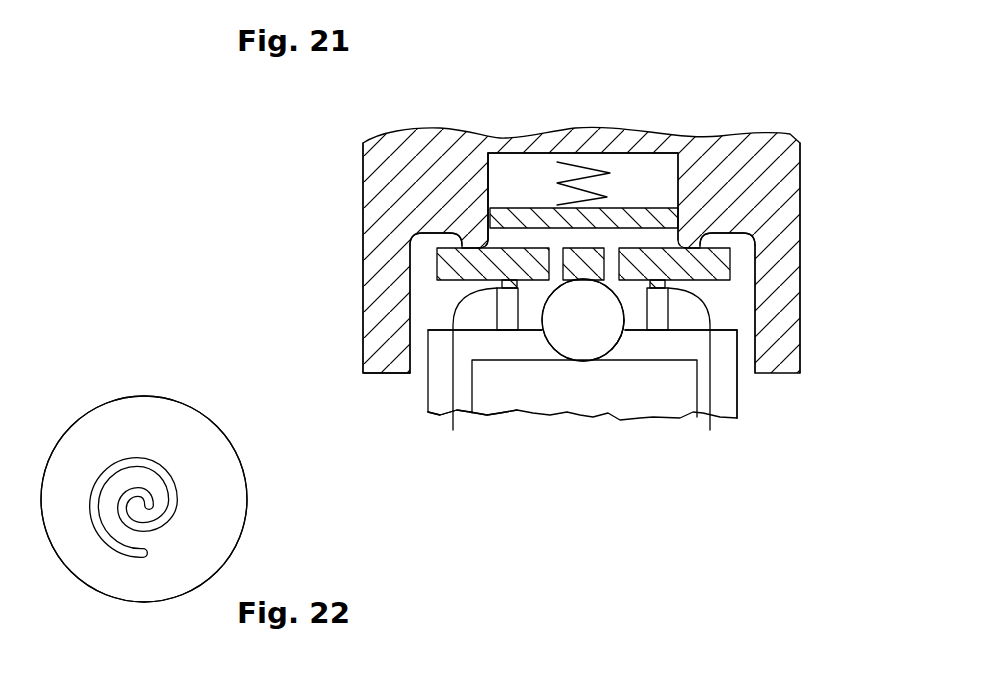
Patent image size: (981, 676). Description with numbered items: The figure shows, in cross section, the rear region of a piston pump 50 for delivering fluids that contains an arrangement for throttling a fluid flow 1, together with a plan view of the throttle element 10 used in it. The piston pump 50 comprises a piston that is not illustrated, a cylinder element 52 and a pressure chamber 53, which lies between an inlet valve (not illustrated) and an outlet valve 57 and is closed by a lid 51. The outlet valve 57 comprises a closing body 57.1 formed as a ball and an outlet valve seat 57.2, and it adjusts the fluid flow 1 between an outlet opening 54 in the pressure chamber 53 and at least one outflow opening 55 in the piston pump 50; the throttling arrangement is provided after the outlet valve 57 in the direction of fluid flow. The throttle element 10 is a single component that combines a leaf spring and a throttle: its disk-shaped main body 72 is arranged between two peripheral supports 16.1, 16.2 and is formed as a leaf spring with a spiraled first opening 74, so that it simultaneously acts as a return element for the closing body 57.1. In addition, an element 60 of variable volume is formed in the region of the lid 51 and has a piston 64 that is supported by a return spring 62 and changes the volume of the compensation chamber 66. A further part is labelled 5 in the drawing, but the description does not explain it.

In FIG. 21, the fluid flow 1 is at (575, 523).
In FIG. 21, the contact carrier 5 is at (447, 312).
In FIG. 21, the throttle element 10 is at (431, 195).
In FIG. 22, the throttle element 10 is at (74, 386).
In FIG. 21, the peripheral support 16.1 is at (574, 374).
In FIG. 21, the peripheral support 16.2 is at (693, 237).
In FIG. 21, the piston pump 50 is at (741, 96).
In FIG. 21, the lid 51 is at (772, 160).
In FIG. 21, the cylinder element 52 is at (727, 387).
In FIG. 21, the pressure chamber 53 is at (498, 397).
In FIG. 21, the outlet opening 54 is at (541, 362).
In FIG. 21, the outflow opening 55 is at (422, 358).
In FIG. 21, the outlet valve 57 is at (612, 410).
In FIG. 21, the closing body 57.1 is at (585, 348).
In FIG. 21, the outlet valve seat 57.2 is at (629, 348).
In FIG. 21, the element of variable volume 60 is at (592, 96).
In FIG. 21, the return spring 62 is at (586, 162).
In FIG. 21, the piston 64 is at (505, 203).
In FIG. 21, the compensation chamber 66 is at (638, 240).
In FIG. 21, the disk-shaped main body 72 is at (437, 268).
In FIG. 22, the disk-shaped main body 72 is at (145, 397).
In FIG. 21, the spiraled first opening 74 is at (550, 255).
In FIG. 22, the spiraled first opening 74 is at (100, 482).